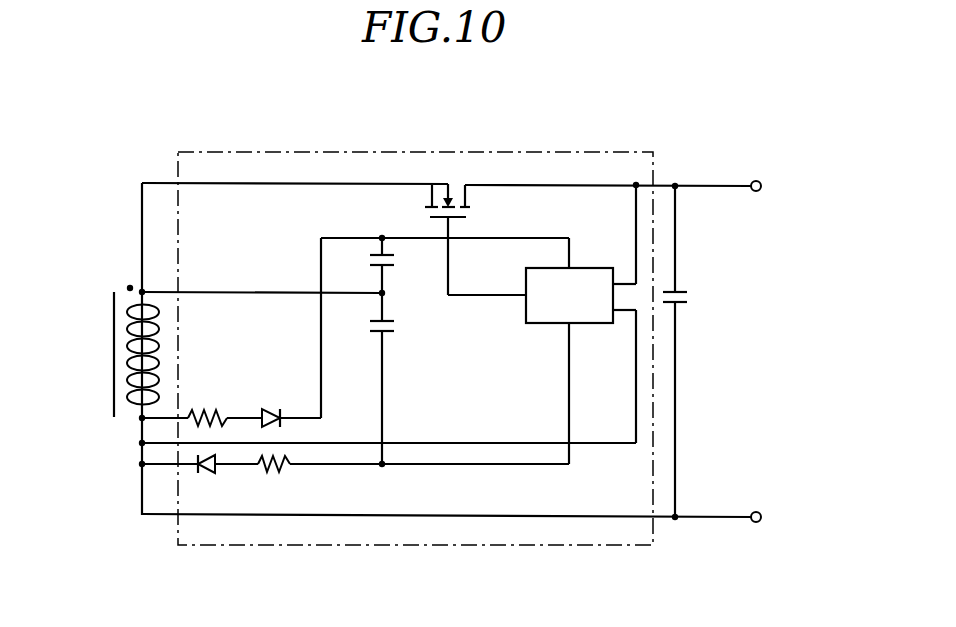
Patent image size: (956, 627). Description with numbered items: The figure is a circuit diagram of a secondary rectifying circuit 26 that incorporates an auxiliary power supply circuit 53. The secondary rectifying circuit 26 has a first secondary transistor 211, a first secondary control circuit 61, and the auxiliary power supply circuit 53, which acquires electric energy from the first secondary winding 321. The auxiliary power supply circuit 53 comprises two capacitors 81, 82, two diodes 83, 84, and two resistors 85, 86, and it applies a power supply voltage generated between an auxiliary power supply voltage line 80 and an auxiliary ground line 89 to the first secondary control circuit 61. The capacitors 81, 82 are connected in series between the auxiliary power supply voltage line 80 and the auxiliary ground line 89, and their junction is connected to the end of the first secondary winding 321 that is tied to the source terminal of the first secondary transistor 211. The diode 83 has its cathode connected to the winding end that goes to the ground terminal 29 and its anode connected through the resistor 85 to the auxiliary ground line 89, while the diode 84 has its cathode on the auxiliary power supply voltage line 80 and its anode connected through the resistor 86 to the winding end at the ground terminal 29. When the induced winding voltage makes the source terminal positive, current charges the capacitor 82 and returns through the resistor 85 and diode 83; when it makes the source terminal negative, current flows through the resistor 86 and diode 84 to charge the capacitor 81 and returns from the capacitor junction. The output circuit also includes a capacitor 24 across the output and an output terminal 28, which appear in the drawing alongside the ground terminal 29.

The secondary rectifying circuit 26 is at (403, 150).
The output terminal 28 is at (761, 182).
The ground terminal 29 is at (756, 511).
The smoothing capacitor 24 is at (690, 300).
The first secondary transistor 211 is at (470, 215).
The auxiliary power supply voltage line 80 is at (571, 238).
The capacitor 81 is at (396, 262).
The capacitor 82 is at (396, 327).
The auxiliary power supply circuit 53 is at (332, 222).
The first secondary control circuit 61 is at (535, 326).
The auxiliary ground line 89 is at (518, 468).
The resistor 86 is at (204, 410).
The resistor 85 is at (274, 475).
The diode 84 is at (272, 410).
The diode 83 is at (208, 475).
The first secondary winding 321 is at (127, 300).